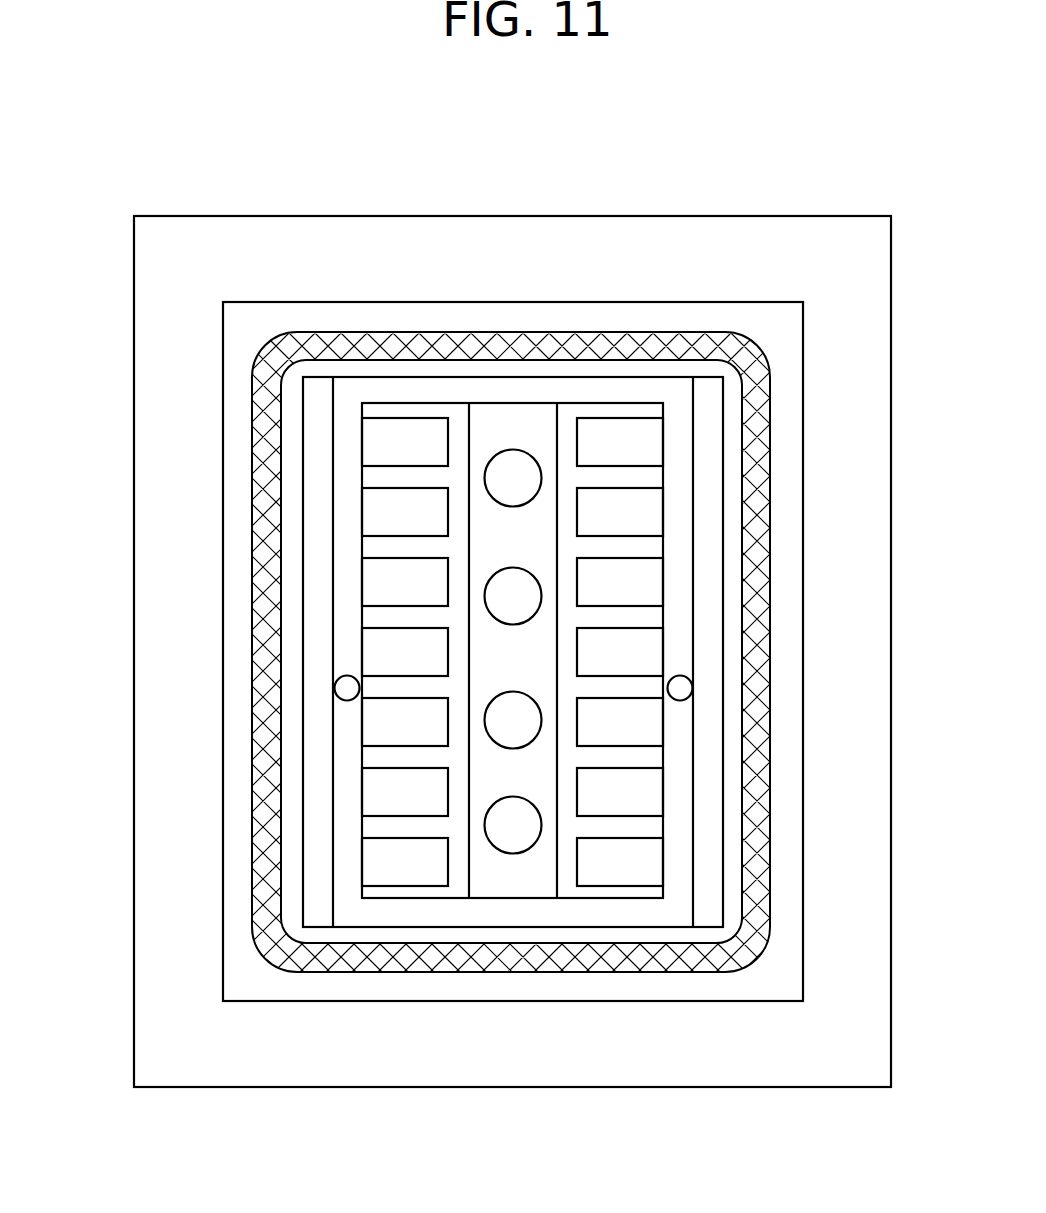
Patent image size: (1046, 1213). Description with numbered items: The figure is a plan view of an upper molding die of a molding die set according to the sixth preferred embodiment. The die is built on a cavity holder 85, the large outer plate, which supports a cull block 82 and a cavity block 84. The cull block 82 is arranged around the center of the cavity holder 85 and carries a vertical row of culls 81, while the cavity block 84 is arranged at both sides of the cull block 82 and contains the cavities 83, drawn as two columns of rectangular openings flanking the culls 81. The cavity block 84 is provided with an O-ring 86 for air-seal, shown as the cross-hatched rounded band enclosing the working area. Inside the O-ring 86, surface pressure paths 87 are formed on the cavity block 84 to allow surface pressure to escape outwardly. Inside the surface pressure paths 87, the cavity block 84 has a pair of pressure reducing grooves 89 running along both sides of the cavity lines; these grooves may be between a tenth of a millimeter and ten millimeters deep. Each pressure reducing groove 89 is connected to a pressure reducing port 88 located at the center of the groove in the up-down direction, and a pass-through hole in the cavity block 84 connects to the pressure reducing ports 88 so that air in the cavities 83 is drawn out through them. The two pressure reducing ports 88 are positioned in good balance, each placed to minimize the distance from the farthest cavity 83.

The cull 81 is at (518, 847).
The cull block 82 is at (497, 885).
The cavity 83 is at (657, 512).
The cavity block 84 is at (787, 582).
The cavity holder 85 is at (230, 1080).
The O-ring 86 is at (772, 389).
The surface pressure path 87 is at (715, 795).
The pressure reducing port 88 is at (335, 690).
The pressure reducing groove 89 is at (343, 510).